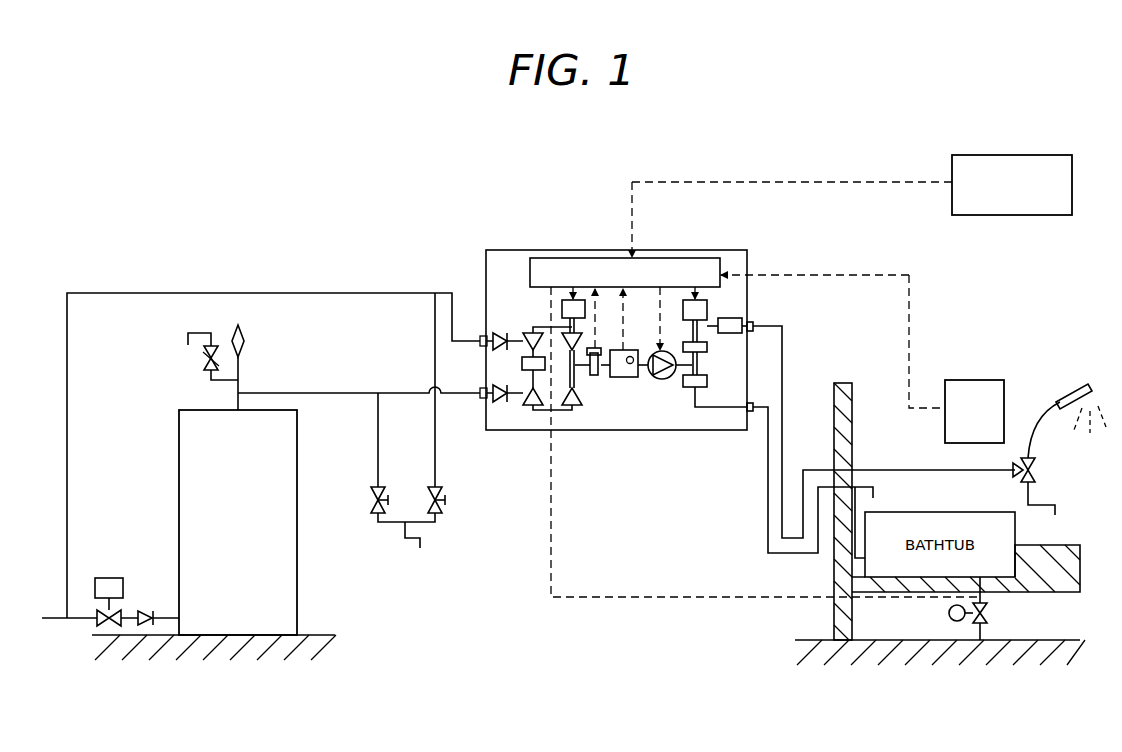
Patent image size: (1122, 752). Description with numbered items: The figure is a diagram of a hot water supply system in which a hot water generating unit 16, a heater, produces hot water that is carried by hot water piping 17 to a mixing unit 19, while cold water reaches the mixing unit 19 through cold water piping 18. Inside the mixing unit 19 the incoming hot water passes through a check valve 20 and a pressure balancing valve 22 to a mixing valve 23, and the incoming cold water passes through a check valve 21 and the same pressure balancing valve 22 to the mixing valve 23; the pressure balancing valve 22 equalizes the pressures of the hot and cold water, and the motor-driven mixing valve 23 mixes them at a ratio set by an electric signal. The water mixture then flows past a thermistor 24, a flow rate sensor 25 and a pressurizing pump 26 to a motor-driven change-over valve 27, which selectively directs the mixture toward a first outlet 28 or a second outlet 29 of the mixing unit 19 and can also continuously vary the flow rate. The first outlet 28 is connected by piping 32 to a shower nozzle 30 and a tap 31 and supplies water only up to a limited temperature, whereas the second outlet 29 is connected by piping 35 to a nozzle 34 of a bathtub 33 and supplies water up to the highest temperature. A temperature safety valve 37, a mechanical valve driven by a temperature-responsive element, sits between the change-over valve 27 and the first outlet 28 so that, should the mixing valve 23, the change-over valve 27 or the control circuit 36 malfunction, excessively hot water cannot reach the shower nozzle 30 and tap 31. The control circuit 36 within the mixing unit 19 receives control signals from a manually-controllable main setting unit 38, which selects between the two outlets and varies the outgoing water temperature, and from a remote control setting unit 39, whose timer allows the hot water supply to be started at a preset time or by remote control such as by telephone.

The hot water generating unit 16 is at (297, 560).
The hot water piping 17 is at (453, 398).
The cold water piping 18 is at (441, 292).
The mixing unit 19 is at (596, 432).
The check valve 20 is at (494, 405).
The check valve 21 is at (493, 333).
The pressure balancing valve 22 is at (527, 333).
The mixing valve 23 is at (578, 412).
The thermistor 24 is at (597, 380).
The flow rate sensor 25 is at (628, 380).
The pressurizing pump 26 is at (668, 378).
The change-over valve 27 is at (707, 312).
The first outlet 28 is at (753, 322).
The second outlet 29 is at (750, 402).
The shower nozzle 30 is at (1080, 383).
The tap 31 is at (1057, 508).
The piping 32 is at (783, 422).
The bathtub 33 is at (872, 565).
The nozzle 34 is at (863, 486).
The piping 35 is at (768, 515).
The control circuit 36 is at (598, 258).
The temperature safety valve 37 is at (735, 336).
The main setting unit 38 is at (983, 380).
The remote control setting unit 39 is at (1010, 155).